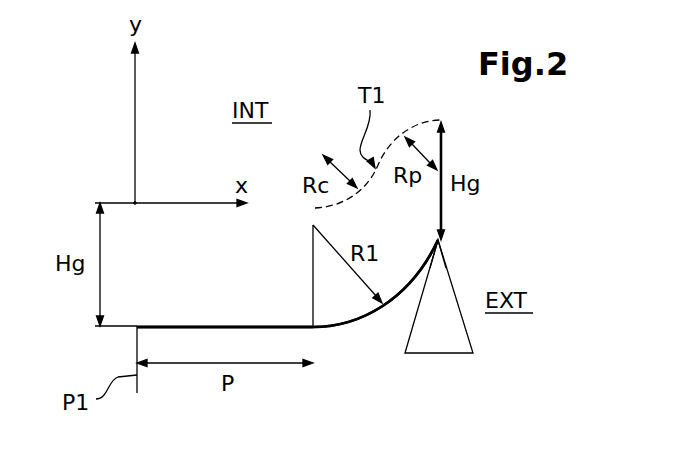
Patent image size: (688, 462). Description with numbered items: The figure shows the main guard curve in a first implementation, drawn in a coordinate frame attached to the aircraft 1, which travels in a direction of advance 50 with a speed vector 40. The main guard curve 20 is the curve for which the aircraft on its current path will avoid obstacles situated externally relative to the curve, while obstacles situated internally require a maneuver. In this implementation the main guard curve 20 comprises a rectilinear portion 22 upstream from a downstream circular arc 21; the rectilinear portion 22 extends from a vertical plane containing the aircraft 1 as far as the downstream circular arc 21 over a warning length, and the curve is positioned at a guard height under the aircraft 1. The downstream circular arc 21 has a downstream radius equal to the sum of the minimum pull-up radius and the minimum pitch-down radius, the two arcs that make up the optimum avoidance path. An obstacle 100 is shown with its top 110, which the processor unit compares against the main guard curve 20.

The aircraft 1 is at (144, 194).
The main guard curve 20 is at (334, 337).
The downstream circular arc 21 is at (418, 280).
The rectilinear portion 22 is at (255, 326).
The direction of advance 50 is at (212, 206).
The speed vector 40 is at (176, 233).
The obstacle 100 is at (473, 353).
The top 110 is at (442, 240).